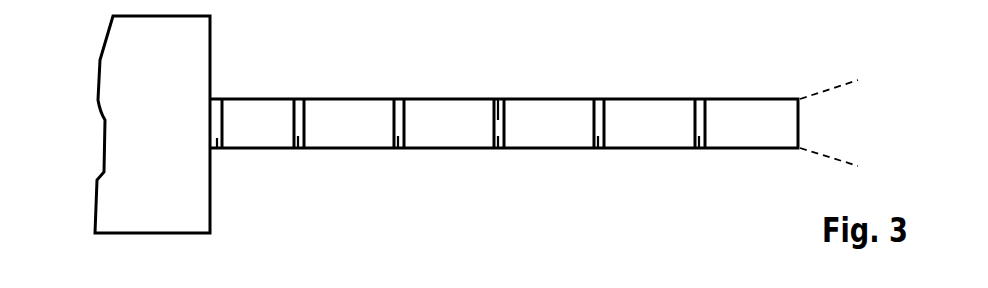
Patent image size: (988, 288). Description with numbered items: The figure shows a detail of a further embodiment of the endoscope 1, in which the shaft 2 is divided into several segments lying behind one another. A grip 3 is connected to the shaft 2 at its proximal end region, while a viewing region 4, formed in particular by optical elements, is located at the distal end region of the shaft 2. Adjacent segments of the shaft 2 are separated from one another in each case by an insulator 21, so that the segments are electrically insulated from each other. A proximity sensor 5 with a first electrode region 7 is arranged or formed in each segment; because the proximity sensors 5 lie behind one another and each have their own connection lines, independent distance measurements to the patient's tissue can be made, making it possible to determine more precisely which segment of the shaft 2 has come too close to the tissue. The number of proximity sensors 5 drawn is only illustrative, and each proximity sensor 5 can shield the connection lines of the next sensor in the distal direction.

The endoscope 1 is at (786, 63).
The shaft 2 is at (530, 148).
The grip 3 is at (130, 120).
The viewing region 4 is at (829, 123).
The proximity sensor 5 is at (263, 150).
The first electrode region 7 is at (258, 118).
The insulator 21 is at (217, 148).